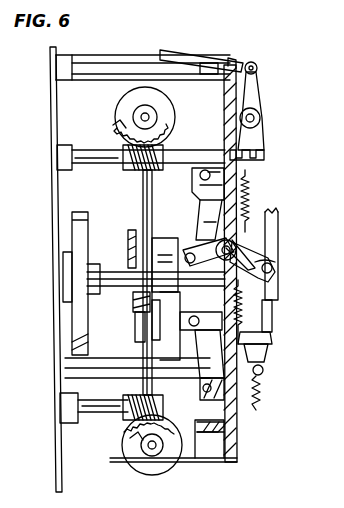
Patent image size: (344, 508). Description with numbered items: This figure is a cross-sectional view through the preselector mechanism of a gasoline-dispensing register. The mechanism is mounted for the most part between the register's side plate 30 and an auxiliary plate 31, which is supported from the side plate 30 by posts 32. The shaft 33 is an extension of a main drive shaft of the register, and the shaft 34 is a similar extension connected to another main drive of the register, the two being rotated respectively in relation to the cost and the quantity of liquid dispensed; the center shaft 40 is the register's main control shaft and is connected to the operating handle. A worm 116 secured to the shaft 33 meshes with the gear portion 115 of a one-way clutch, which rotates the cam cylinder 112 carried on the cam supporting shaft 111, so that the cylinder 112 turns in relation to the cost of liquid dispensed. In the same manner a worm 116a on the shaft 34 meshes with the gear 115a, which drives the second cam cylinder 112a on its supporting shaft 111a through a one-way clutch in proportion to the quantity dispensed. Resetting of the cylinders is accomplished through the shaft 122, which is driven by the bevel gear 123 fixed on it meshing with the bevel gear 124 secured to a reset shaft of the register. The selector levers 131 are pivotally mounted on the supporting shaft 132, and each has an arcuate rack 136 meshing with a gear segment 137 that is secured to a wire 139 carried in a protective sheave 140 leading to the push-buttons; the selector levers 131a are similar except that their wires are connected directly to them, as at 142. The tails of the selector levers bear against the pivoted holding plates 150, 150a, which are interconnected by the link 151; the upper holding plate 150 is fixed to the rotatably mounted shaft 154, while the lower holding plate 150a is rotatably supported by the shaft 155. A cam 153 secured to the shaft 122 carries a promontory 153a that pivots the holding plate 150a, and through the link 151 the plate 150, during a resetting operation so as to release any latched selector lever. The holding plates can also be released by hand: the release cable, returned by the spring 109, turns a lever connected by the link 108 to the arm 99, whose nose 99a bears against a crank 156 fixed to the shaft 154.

The side plate 30 is at (50, 48).
The auxiliary plate 31 is at (240, 442).
The posts 32 is at (86, 56).
The main drive shaft 33 is at (75, 157).
The shaft 34 is at (80, 409).
The center shaft 40 is at (100, 280).
The arm 99 is at (278, 240).
The nose 99a is at (234, 240).
The link 108 is at (276, 212).
The spring 109 is at (262, 393).
The cam supporting shaft 111 is at (141, 115).
The supporting shaft 111a is at (148, 448).
The cylinder 112 is at (134, 90).
The cylinder 112a is at (126, 477).
The gear portion 115 is at (118, 122).
The gear 115a is at (136, 437).
The worm 116 is at (128, 148).
The worm 116a is at (128, 421).
The shaft 122 is at (143, 184).
The bevel gear 123 is at (133, 303).
The bevel gear 124 is at (128, 243).
The selector levers 131 is at (222, 192).
The selector levers 131a is at (266, 353).
The supporting shaft 132 is at (226, 177).
The arcuate rack 136 is at (246, 162).
The gear segment 137 is at (252, 134).
The wires 139 is at (256, 64).
The protective sheaves 140 is at (170, 48).
The wire connection 142 is at (264, 370).
The holding plate 150 is at (160, 240).
The holding plate 150a is at (274, 333).
The link 151 is at (274, 309).
The cam 153 is at (135, 320).
The promontory 153a is at (152, 333).
The shaft 154 is at (184, 250).
The shaft 155 is at (195, 326).
The crank 156 is at (276, 262).